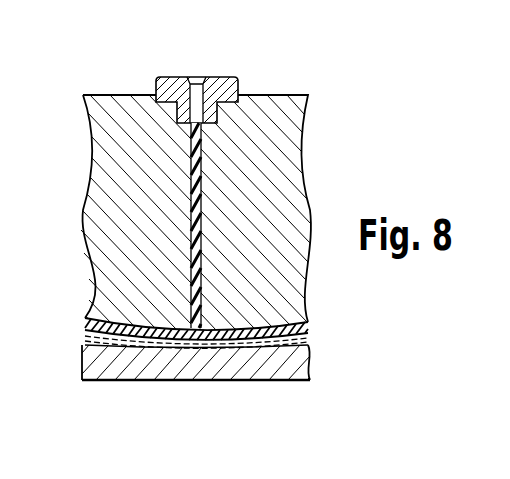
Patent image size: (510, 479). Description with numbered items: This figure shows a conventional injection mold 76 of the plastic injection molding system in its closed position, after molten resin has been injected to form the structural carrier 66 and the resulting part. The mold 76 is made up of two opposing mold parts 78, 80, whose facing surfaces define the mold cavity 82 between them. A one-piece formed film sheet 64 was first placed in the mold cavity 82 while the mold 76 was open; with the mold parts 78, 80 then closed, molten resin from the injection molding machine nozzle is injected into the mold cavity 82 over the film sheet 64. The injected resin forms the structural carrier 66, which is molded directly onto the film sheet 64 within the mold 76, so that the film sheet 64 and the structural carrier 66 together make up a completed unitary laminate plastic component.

The injection mold 76 is at (273, 60).
The mold part 78 is at (122, 95).
The structural carrier 66 is at (252, 325).
The mold cavity 82 is at (113, 340).
The film sheet 64 is at (268, 347).
The mold part 80 is at (183, 380).